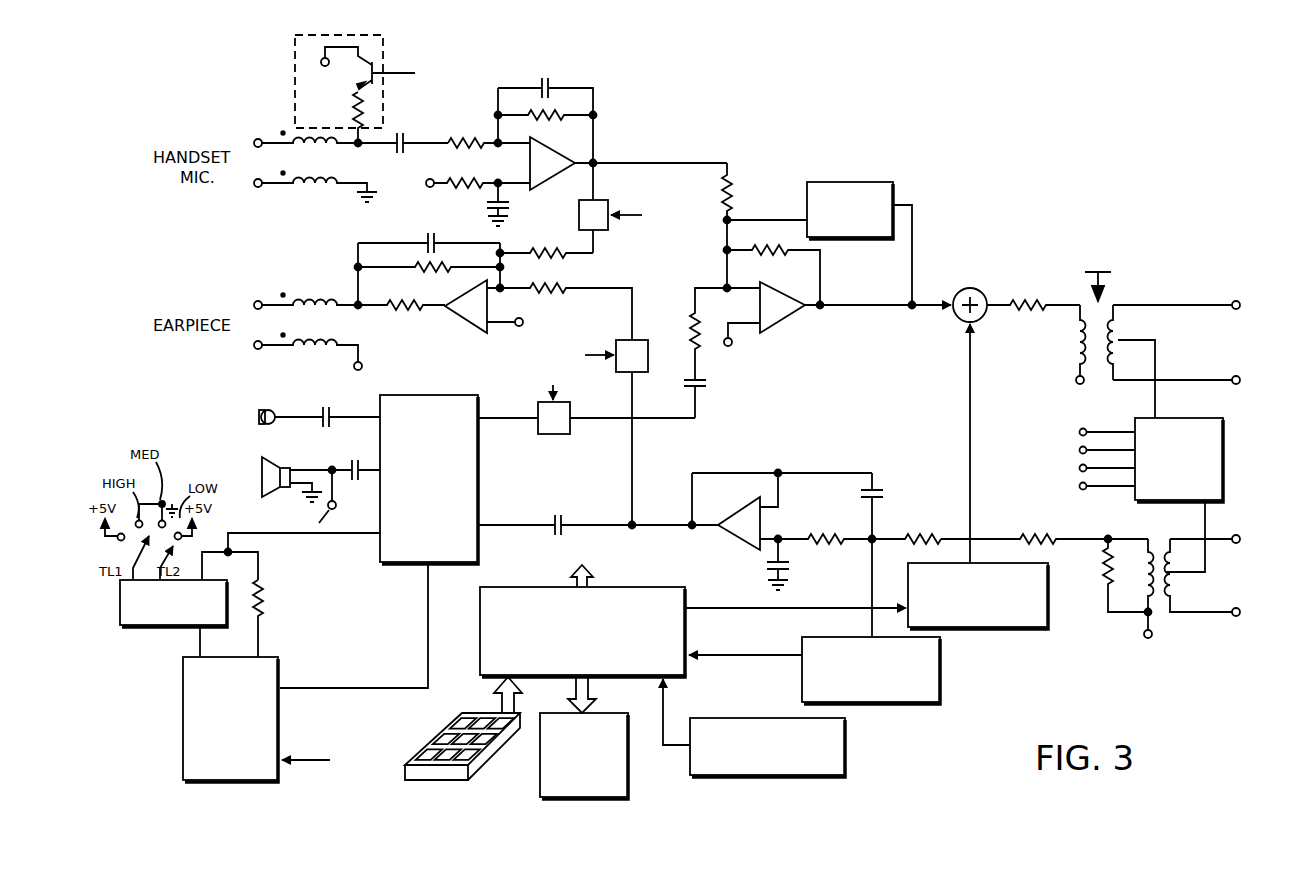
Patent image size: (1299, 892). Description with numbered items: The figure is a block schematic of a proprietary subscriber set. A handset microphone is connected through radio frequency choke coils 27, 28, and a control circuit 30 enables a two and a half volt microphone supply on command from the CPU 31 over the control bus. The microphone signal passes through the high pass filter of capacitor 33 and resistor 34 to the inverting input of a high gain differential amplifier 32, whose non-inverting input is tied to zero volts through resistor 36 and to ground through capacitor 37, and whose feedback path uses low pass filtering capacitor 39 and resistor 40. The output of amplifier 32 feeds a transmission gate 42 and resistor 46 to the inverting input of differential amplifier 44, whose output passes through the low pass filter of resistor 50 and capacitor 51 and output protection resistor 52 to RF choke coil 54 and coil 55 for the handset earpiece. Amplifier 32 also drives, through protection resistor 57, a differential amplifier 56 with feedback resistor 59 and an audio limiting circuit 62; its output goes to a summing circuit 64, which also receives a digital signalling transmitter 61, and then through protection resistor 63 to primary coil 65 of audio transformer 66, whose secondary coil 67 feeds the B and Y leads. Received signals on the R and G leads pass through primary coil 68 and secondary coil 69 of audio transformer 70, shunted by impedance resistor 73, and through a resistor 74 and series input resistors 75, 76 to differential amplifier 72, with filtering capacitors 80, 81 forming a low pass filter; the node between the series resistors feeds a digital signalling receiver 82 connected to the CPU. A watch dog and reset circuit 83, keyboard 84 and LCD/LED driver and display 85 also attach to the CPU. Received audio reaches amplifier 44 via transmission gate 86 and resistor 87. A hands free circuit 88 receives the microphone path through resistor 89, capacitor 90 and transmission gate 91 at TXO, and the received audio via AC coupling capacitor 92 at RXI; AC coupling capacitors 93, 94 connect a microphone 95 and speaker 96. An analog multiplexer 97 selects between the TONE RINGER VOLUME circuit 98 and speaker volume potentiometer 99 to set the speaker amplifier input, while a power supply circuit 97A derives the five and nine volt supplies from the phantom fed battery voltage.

The radio frequency choke coil 27 is at (306, 150).
The radio frequency choke coil 28 is at (302, 190).
The control circuit 30 is at (295, 70).
The CPU 31 is at (636, 586).
The high gain differential amplifier 32 is at (562, 186).
The capacitor 33 is at (400, 132).
The resistor 34 is at (468, 136).
The resistor 36 is at (462, 190).
The capacitor 37 is at (488, 206).
The low pass filtering capacitor 39 is at (563, 76).
The resistor 40 is at (545, 120).
The transmission gate 42 is at (608, 205).
The differential amplifier 44 is at (457, 316).
The resistor 46 is at (546, 241).
The resistor 50 is at (420, 272).
The capacitor 51 is at (424, 240).
The output protection resistor 52 is at (404, 312).
The RF choke coil 54 is at (316, 294).
The coil 55 is at (306, 356).
The differential amplifier 56 is at (788, 318).
The protection resistor 57 is at (734, 190).
The feedback resistor 59 is at (770, 258).
The digital signalling transmitter 61 is at (1020, 628).
The audio limiting circuit 62 is at (845, 181).
The protection resistor 63 is at (1030, 298).
The summing circuit 64 is at (968, 287).
The primary coil 65 is at (1074, 336).
The audio transformer 66 is at (1098, 275).
The secondary coil 67 is at (1122, 326).
The primary coil 68 is at (1172, 548).
The secondary coil 69 is at (1158, 548).
The audio transformer 70 is at (1165, 618).
The differential amplifier 72 is at (738, 508).
The impedance resistor 73 is at (1102, 576).
The resistor 74 is at (1040, 530).
The series input resistor 75 is at (920, 530).
The series input resistor 76 is at (838, 530).
The filtering capacitor 80 is at (790, 570).
The filtering capacitor 81 is at (884, 486).
The digital signalling receiver 82 is at (942, 662).
The watch dog and reset circuit 83 is at (848, 745).
The keyboard 84 is at (444, 724).
The LCD/LED driver and display 85 is at (540, 770).
The transmission gate 86 is at (614, 338).
The resistor 87 is at (556, 282).
The hands free circuit 88 is at (386, 566).
The resistor 89 is at (690, 312).
The capacitor 90 is at (706, 385).
The transmission gate 91 is at (558, 434).
The AC coupling capacitor 92 is at (562, 518).
The AC coupling capacitor 93 is at (324, 410).
The AC coupling capacitor 94 is at (359, 458).
The microphone 95 is at (272, 409).
The speaker 96 is at (277, 461).
The analog multiplexer 97 is at (183, 700).
The power supply circuit 97A is at (1225, 460).
The TONE RINGER VOLUME circuit 98 is at (146, 626).
The speaker volume potentiometer 99 is at (267, 598).